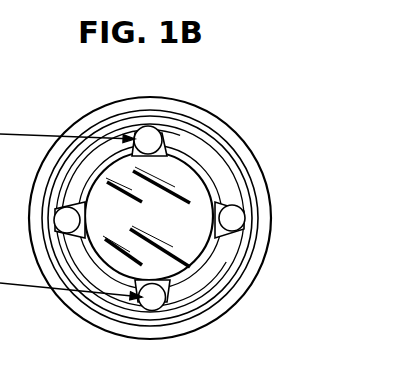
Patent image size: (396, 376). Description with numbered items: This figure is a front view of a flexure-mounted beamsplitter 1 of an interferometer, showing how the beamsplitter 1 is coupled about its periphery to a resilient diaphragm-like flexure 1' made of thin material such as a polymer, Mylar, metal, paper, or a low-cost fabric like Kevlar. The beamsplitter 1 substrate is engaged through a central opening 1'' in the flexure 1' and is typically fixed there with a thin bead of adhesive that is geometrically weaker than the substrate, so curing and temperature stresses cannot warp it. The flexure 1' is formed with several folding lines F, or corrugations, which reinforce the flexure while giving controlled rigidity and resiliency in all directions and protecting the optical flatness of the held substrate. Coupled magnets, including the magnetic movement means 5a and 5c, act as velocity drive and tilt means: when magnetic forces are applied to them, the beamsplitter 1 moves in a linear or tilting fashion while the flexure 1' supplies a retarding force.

The beamsplitter 1 is at (149, 216).
The resilient diaphragm-like flexure 1' is at (167, 203).
The central opening 1'' is at (206, 197).
The folding lines F is at (235, 184).
The magnetic movement means 5a is at (67, 227).
The magnetic movement means 5c is at (232, 225).